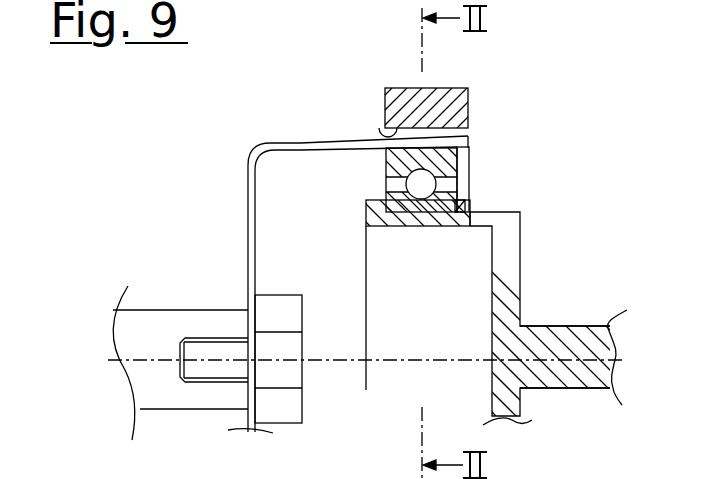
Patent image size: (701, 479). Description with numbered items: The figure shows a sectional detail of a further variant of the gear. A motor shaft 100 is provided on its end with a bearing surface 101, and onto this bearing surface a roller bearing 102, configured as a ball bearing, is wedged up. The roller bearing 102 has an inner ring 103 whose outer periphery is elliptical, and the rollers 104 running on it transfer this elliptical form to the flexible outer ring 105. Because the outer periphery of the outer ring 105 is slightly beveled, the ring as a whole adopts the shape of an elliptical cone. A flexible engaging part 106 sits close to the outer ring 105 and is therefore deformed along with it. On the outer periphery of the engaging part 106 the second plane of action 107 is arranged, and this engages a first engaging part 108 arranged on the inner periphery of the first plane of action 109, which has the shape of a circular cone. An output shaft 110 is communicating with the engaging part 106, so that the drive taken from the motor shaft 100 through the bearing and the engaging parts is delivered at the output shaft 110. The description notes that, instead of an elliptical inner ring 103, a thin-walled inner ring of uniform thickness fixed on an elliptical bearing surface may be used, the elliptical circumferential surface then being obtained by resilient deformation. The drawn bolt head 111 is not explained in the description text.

The motor shaft 100 is at (560, 337).
The bearing surface 101 is at (495, 208).
The roller bearing 102 is at (461, 174).
The inner ring 103 is at (403, 205).
The rollers 104 is at (415, 188).
The flexible outer ring 105 is at (398, 162).
The flexible engaging part 106 is at (290, 145).
The second plane of action 107 is at (468, 134).
The first engaging part 108 is at (400, 138).
The first plane of action 109 is at (458, 96).
The output shaft 110 is at (193, 320).
The bolt head 111 is at (294, 387).